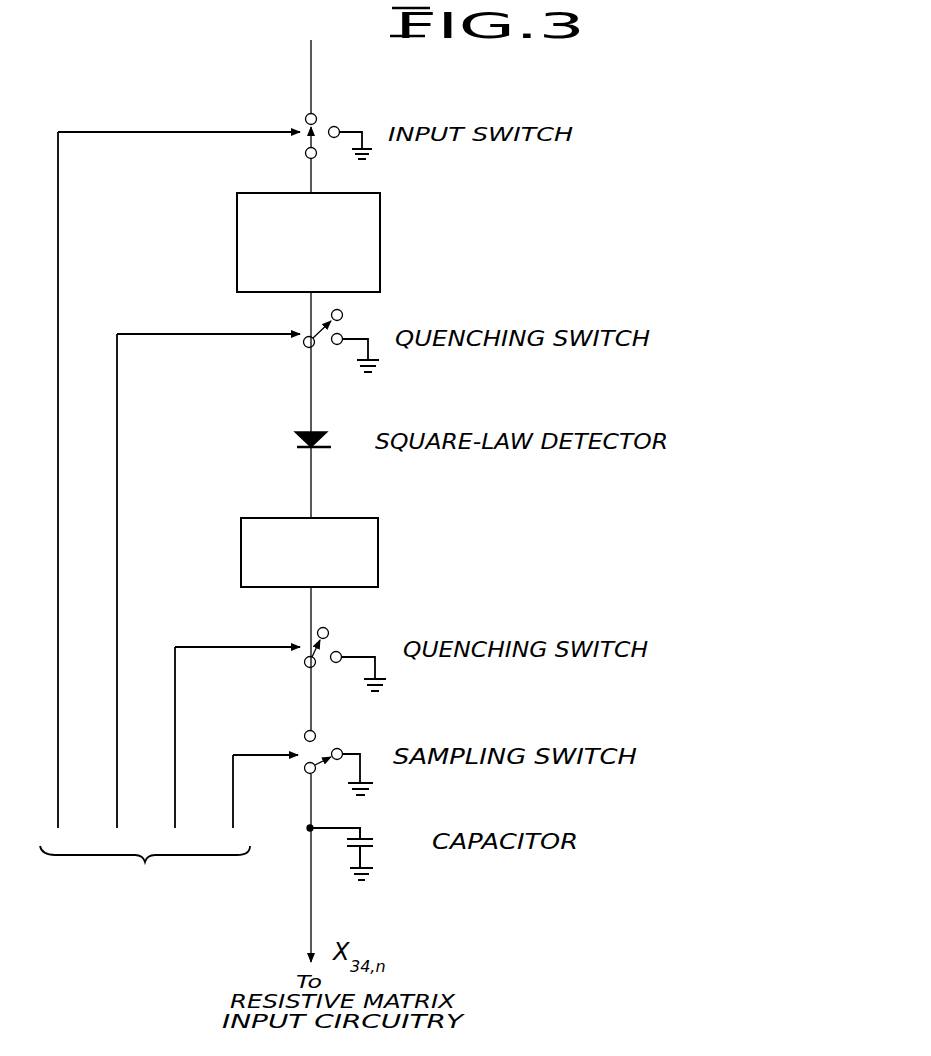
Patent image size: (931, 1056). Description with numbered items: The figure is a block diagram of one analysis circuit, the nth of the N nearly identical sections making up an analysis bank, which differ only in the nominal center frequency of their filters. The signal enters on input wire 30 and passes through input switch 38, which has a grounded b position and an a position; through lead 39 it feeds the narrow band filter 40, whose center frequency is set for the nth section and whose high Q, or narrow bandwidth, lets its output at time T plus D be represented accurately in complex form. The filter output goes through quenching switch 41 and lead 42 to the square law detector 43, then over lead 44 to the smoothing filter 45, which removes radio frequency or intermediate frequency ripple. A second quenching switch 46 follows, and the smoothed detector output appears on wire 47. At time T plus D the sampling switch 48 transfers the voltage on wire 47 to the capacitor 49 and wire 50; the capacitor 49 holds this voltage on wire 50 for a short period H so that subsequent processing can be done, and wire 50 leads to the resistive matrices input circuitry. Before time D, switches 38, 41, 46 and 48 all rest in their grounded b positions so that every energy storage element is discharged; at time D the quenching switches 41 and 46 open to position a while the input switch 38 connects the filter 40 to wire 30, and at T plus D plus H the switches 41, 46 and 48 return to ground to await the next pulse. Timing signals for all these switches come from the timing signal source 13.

The timing signal source 13 is at (146, 899).
The input wire 30 is at (311, 75).
The input switch 38 is at (350, 110).
The lead to narrow band filter 39 is at (311, 176).
The narrow band filter 40 is at (380, 243).
The quenching switch 41 is at (300, 350).
The lead to square-law detector 42 is at (311, 405).
The square law detector 43 is at (292, 440).
The lead to smoothing circuit 44 is at (311, 487).
The smoothing filter 45 is at (378, 562).
The quenching switch 46 is at (295, 663).
The wire 47 is at (311, 703).
The sampling switch 48 is at (297, 762).
The capacitor 49 is at (380, 853).
The wire 50 is at (311, 893).